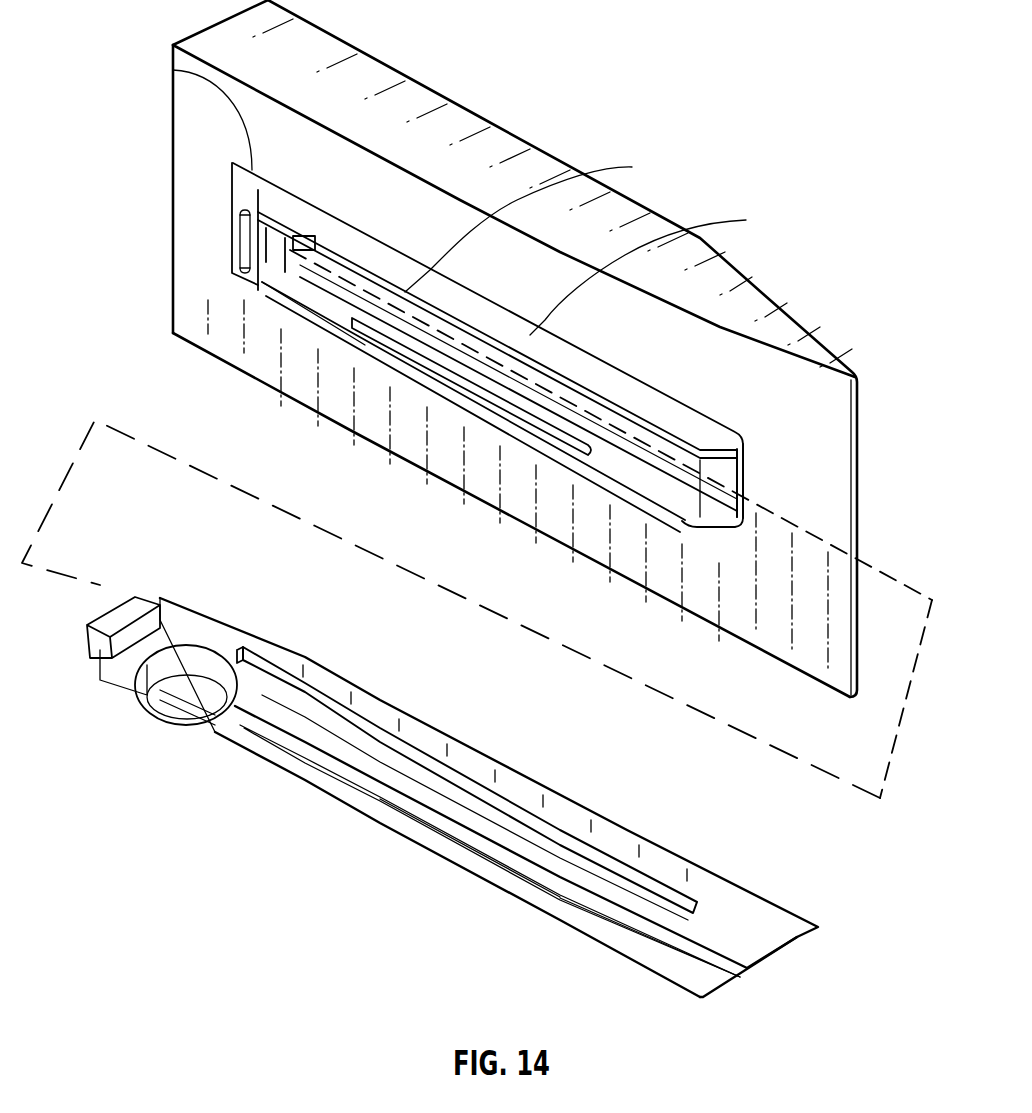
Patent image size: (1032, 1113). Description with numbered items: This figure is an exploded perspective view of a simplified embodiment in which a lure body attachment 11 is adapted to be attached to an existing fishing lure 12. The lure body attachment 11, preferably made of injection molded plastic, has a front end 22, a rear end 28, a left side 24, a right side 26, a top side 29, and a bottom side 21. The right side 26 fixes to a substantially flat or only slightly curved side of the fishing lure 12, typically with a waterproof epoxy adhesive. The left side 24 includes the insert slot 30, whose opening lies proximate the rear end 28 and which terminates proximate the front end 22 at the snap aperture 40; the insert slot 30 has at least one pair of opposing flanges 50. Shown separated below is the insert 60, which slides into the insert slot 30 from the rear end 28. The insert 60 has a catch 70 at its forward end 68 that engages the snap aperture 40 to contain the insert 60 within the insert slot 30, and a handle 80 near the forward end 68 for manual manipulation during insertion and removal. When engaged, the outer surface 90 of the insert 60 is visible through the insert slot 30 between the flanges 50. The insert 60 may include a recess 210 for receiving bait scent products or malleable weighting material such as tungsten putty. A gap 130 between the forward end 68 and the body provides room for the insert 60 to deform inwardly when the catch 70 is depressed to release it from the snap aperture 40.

The lure body attachment 11 is at (173, 70).
The fishing lure 12 is at (445, 103).
The front end 22 is at (235, 170).
The right side 26 is at (533, 221).
The top side 29 is at (654, 270).
The snap aperture 40 is at (245, 244).
The insert slot 30 is at (330, 276).
The bottom side 21 is at (365, 348).
The flanges 50 is at (482, 394).
The rear end 28 is at (737, 492).
The left side 24 is at (707, 487).
The insert 60 is at (540, 735).
The forward end 68 is at (125, 615).
The gap 130 is at (230, 640).
The catch 70 is at (102, 652).
The handle 80 is at (173, 705).
The recess 210 is at (433, 823).
The outer surface 90 is at (537, 905).